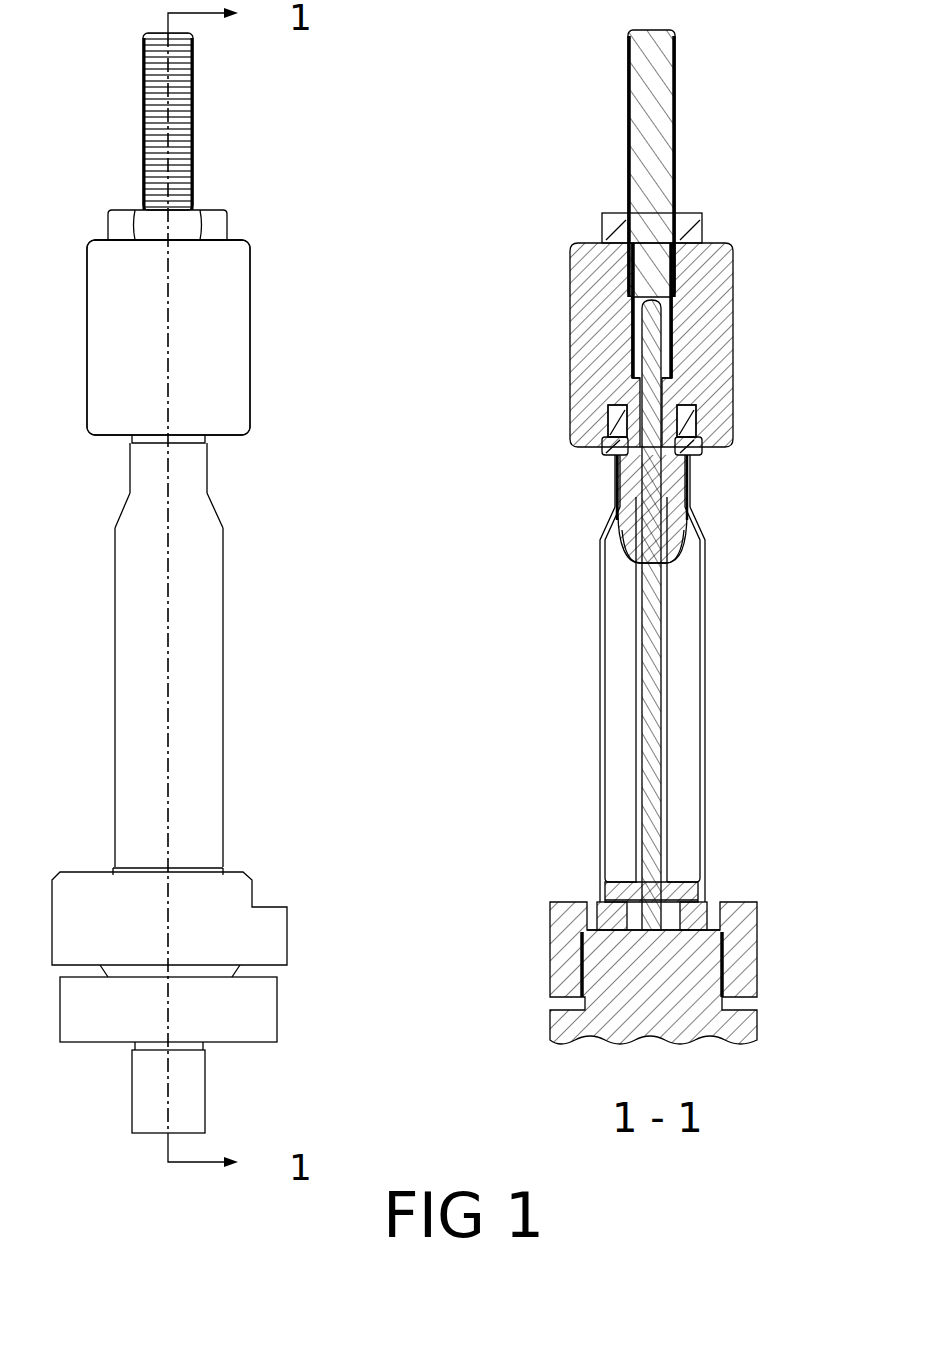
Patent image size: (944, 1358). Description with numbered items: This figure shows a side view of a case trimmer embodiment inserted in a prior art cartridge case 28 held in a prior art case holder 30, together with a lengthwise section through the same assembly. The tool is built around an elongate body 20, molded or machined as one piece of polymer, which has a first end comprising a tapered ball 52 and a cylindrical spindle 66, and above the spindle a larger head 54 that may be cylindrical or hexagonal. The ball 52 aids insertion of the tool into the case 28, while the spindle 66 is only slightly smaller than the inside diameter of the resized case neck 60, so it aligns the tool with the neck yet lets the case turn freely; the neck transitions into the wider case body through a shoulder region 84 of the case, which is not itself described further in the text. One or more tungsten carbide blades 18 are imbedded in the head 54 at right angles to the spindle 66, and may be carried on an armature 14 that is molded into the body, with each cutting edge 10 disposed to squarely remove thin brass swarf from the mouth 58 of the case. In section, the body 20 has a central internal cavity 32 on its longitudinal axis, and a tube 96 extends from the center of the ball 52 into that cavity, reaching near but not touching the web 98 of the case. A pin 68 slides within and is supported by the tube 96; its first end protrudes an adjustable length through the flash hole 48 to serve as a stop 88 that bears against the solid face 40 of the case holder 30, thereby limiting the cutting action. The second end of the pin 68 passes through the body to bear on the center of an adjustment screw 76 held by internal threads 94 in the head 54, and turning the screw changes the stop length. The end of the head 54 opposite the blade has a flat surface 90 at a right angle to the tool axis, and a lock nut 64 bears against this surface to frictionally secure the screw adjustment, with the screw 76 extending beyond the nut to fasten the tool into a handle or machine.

The cutting edge 10 is at (696, 457).
The armature 14 is at (688, 420).
The blade 18 is at (690, 447).
The elongate body 20 is at (272, 303).
The cartridge case 28 is at (208, 715).
The case holder 30 is at (272, 885).
The internal cavity 32 is at (670, 365).
The solid face 40 is at (663, 930).
The flash hole 48 is at (668, 882).
The ball 52 is at (682, 553).
The head 54 is at (220, 350).
The mouth 58 is at (200, 440).
The case neck 60 is at (207, 470).
The lock nut 64 is at (180, 225).
The spindle 66 is at (685, 487).
The pin 68 is at (652, 747).
The adjustment screw 76 is at (190, 125).
The tapered transition 84 is at (215, 515).
The stop 88 is at (673, 923).
The flat surface 90 is at (228, 243).
The internal threads 94 is at (677, 333).
The tube 96 is at (665, 647).
The web 98 is at (660, 884).